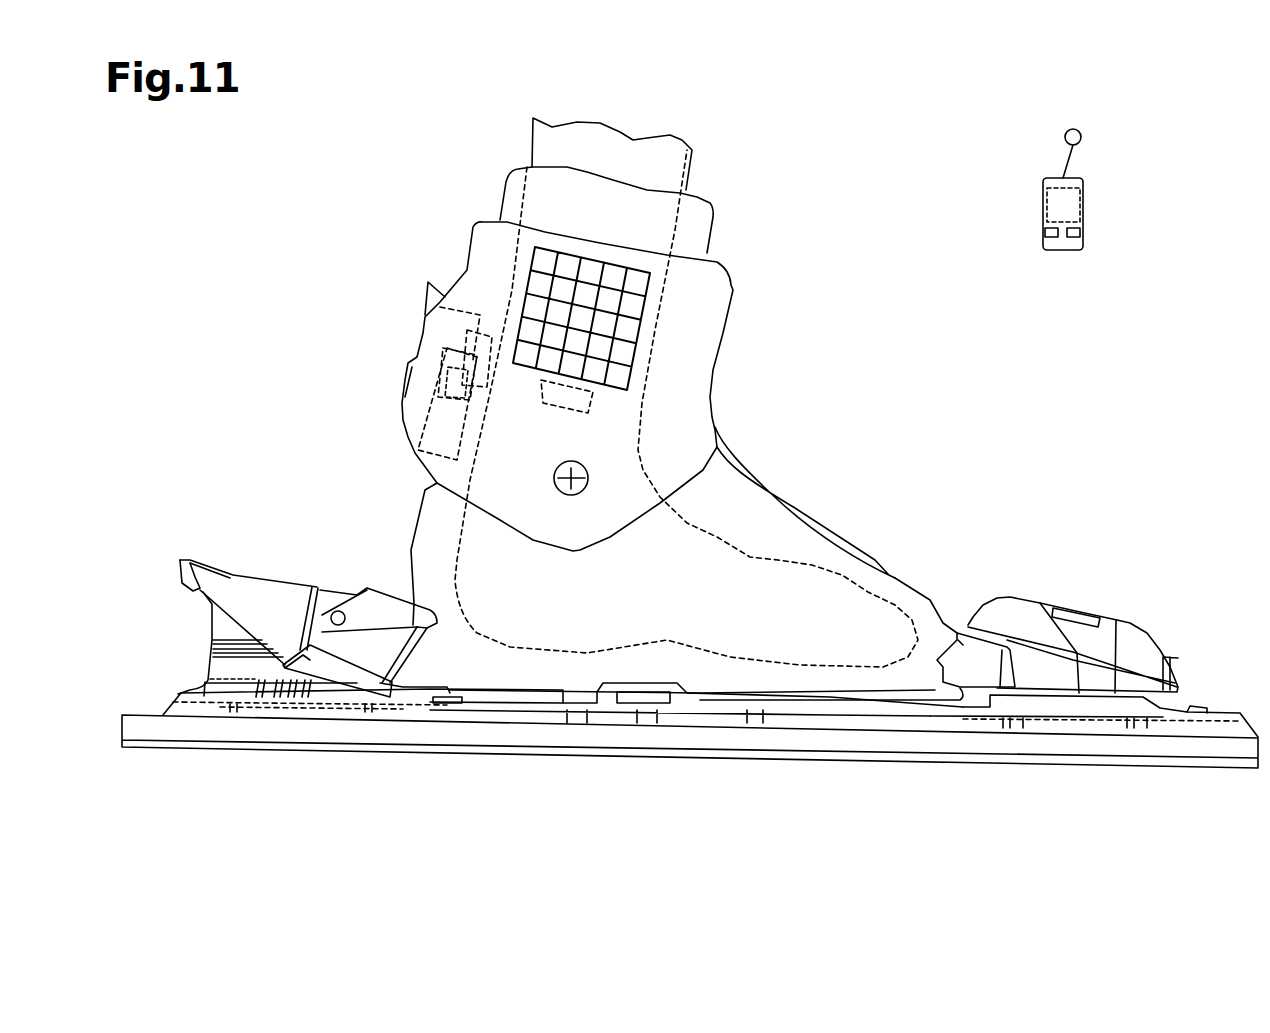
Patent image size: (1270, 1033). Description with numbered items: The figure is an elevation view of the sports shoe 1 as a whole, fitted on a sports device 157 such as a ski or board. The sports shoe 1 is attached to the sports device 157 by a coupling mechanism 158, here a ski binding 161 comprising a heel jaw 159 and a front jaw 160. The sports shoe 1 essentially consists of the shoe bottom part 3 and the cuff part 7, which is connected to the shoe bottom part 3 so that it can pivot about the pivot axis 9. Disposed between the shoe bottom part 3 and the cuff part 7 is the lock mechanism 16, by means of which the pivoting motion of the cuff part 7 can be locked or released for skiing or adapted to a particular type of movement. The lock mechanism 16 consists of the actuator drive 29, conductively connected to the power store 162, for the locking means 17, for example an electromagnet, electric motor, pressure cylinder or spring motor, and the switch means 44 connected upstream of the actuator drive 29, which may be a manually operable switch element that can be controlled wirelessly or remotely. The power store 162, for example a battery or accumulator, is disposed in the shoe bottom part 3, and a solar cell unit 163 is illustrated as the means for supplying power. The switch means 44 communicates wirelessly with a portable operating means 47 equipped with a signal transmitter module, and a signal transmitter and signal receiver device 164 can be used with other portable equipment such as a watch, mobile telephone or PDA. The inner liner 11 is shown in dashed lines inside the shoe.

The sports shoe 1 is at (862, 149).
The shoe bottom part 3 is at (865, 607).
The cuff part 7 is at (700, 375).
The pivot axis 9 is at (588, 478).
The inner boot liner 11 is at (540, 620).
The lock mechanism 16 is at (385, 420).
The locking means 17 is at (468, 398).
The actuator drive 29 is at (543, 391).
The switch means 44 is at (470, 337).
The portable operating means 47 is at (423, 295).
The sports device 157 is at (932, 725).
The coupling mechanism 158 is at (1087, 470).
The heel jaw 159 is at (278, 595).
The front jaw 160 is at (1113, 630).
The ski binding 161 is at (1113, 545).
The power store 162 is at (590, 397).
The solar cell unit 163 is at (633, 308).
The signal transmitter and signal receiver device 164 is at (1123, 188).